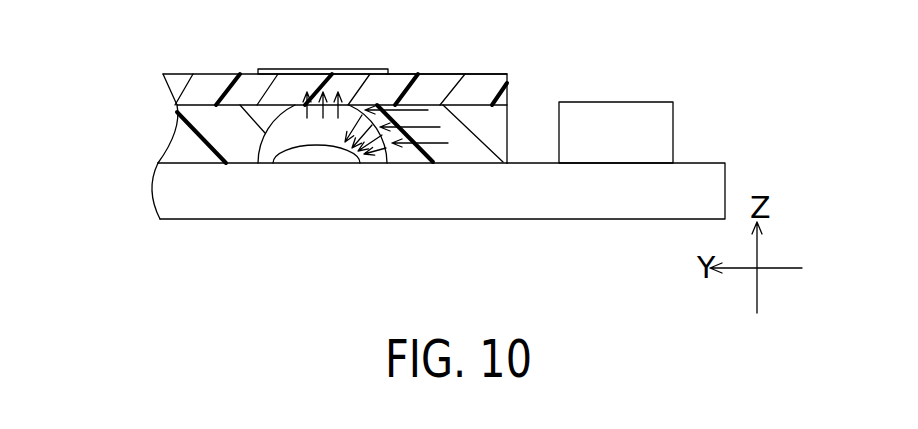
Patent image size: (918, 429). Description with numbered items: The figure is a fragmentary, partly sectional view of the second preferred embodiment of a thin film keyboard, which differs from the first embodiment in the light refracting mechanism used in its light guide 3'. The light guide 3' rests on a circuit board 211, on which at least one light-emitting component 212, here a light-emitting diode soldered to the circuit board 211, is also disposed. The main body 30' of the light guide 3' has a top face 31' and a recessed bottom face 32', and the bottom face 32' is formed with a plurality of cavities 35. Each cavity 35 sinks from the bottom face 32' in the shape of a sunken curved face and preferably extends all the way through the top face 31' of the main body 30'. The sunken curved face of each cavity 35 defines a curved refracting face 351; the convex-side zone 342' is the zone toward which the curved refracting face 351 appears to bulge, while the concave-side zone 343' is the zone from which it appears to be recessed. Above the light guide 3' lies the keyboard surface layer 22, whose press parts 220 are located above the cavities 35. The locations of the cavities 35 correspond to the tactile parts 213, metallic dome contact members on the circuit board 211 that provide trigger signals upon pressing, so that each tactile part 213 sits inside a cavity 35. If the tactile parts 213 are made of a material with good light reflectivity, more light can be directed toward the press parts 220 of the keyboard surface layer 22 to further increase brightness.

The light guide 3' is at (298, 114).
The main body 30' is at (296, 134).
The top face 31' is at (341, 61).
The bottom face 32' is at (298, 184).
The cavity 35 is at (267, 167).
The keyboard surface layer 22 is at (493, 84).
The press part 220 is at (312, 69).
The circuit board 211 is at (597, 187).
The light-emitting component 212 is at (648, 136).
The tactile part 213 is at (315, 137).
The convex-side zone 342' is at (431, 184).
The concave-side zone 343' is at (386, 185).
The curved refracting face 351 is at (362, 112).